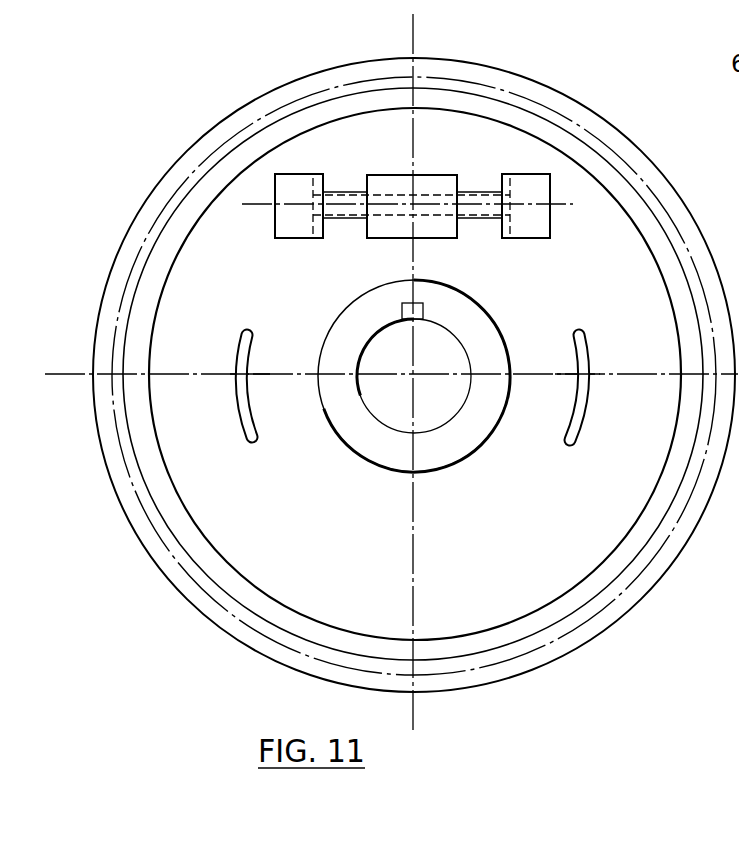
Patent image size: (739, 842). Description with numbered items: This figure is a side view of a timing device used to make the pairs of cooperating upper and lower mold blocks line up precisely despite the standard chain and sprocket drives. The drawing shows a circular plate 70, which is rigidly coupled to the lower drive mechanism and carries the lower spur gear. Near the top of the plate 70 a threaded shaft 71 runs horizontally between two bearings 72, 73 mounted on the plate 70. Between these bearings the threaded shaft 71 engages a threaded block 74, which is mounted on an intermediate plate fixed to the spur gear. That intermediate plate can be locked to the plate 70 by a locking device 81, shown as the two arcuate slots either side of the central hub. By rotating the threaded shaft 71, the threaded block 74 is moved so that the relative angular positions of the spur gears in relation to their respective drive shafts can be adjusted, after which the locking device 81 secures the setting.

The plate 70 is at (176, 317).
The threaded shaft 71 is at (487, 193).
The bearing 72 is at (290, 228).
The bearing 73 is at (533, 229).
The threaded block 74 is at (406, 175).
The locking device 81 is at (243, 410).